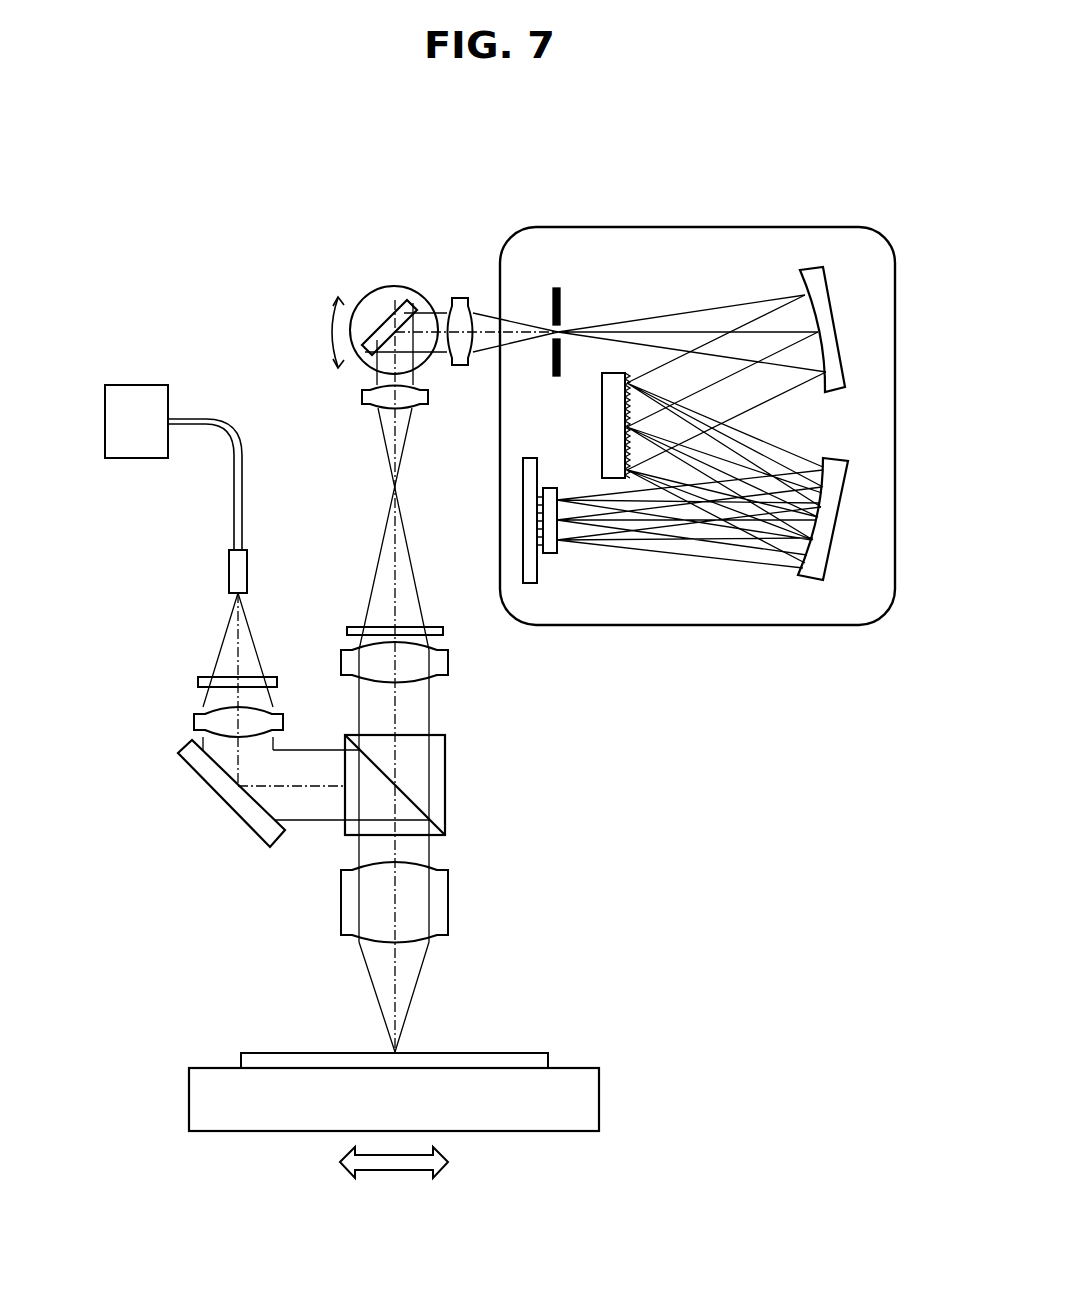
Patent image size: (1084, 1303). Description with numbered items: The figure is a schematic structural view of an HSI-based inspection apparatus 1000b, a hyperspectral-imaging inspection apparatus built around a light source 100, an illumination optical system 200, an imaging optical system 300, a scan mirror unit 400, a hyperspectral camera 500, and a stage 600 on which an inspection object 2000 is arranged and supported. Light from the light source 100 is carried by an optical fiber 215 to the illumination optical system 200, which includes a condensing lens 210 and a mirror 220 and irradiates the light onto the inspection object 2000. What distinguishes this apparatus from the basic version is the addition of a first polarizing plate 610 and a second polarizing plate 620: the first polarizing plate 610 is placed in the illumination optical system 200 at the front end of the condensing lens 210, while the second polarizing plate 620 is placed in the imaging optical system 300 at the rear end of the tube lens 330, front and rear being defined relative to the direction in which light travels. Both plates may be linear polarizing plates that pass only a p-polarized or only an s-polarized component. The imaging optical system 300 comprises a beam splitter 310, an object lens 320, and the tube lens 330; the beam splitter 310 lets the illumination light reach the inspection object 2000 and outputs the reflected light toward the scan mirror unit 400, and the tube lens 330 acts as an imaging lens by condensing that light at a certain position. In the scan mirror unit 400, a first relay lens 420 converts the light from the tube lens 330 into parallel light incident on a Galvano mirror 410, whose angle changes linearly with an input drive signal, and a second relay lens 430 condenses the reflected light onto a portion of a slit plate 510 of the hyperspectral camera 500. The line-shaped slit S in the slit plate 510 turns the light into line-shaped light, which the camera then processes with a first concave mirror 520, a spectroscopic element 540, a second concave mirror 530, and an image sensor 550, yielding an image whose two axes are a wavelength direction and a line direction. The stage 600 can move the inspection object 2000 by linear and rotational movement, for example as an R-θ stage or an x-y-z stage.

The HSI-based inspection apparatus 1000b is at (913, 152).
The light source 100 is at (137, 385).
The optical fiber 215 is at (234, 512).
The illumination optical system 200 is at (105, 712).
The condensing lens 210 is at (194, 720).
The mirror 220 is at (200, 782).
The first polarizing plate 610 is at (198, 682).
The second polarizing plate 620 is at (347, 632).
The imaging optical system 300 is at (532, 720).
The beam splitter 310 is at (445, 785).
The object lens 320 is at (448, 887).
The tube lens 330 is at (448, 668).
The scan mirror unit 400 is at (483, 222).
The Galvano mirror 410 is at (413, 300).
The first relay lens 420 is at (362, 387).
The second relay lens 430 is at (461, 298).
The hyperspectral camera 500 is at (792, 227).
The slit plate 510 is at (560, 297).
The slit S is at (562, 327).
The first concave mirror 520 is at (845, 330).
The second concave mirror 530 is at (848, 520).
The spectroscopic element 540 is at (602, 422).
The image sensor 550 is at (523, 520).
The stage 600 is at (599, 1100).
The inspection object 2000 is at (548, 1062).